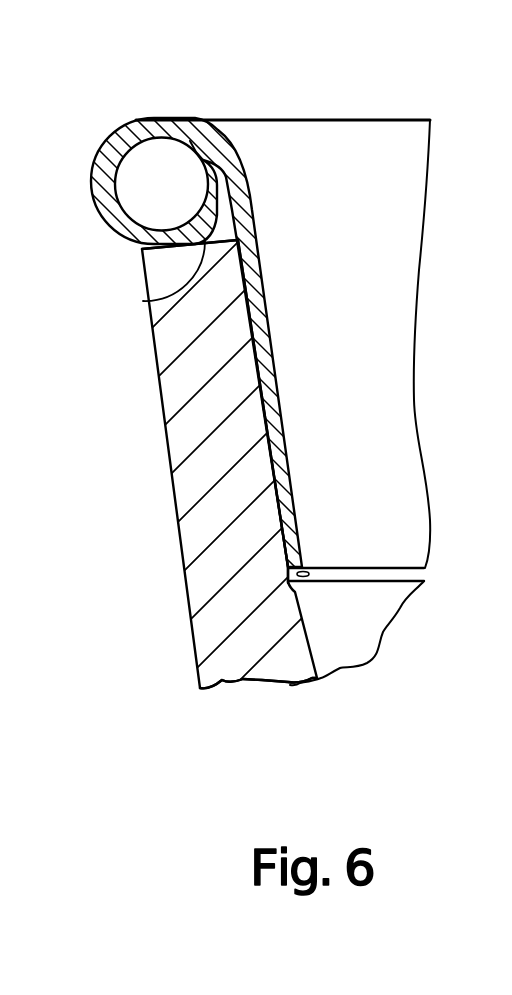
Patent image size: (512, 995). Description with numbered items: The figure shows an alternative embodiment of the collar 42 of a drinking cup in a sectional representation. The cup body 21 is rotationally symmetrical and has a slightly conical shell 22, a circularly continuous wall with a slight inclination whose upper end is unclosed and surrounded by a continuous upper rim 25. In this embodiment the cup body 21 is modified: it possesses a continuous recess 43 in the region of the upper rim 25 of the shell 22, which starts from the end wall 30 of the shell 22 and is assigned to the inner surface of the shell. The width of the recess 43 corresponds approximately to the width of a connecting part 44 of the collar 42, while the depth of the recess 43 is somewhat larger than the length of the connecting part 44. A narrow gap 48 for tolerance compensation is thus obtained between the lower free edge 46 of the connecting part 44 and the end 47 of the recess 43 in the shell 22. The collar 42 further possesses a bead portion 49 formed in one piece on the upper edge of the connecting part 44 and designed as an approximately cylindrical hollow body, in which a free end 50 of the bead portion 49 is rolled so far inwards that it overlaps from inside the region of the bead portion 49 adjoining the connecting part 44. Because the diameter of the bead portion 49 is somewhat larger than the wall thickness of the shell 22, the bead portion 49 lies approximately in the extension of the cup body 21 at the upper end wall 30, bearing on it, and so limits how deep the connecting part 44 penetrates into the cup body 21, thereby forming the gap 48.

The cup body 21 is at (148, 526).
The shell 22 is at (243, 658).
The upper rim 25 is at (158, 263).
The end wall 30 is at (162, 296).
The collar 42 is at (68, 166).
The recess 43 is at (263, 415).
The connecting part 44 is at (292, 490).
The lower free edge 46 is at (306, 571).
The end of the recess 47 is at (310, 592).
The gap 48 is at (385, 578).
The bead portion 49 is at (151, 122).
The free end 50 is at (189, 143).